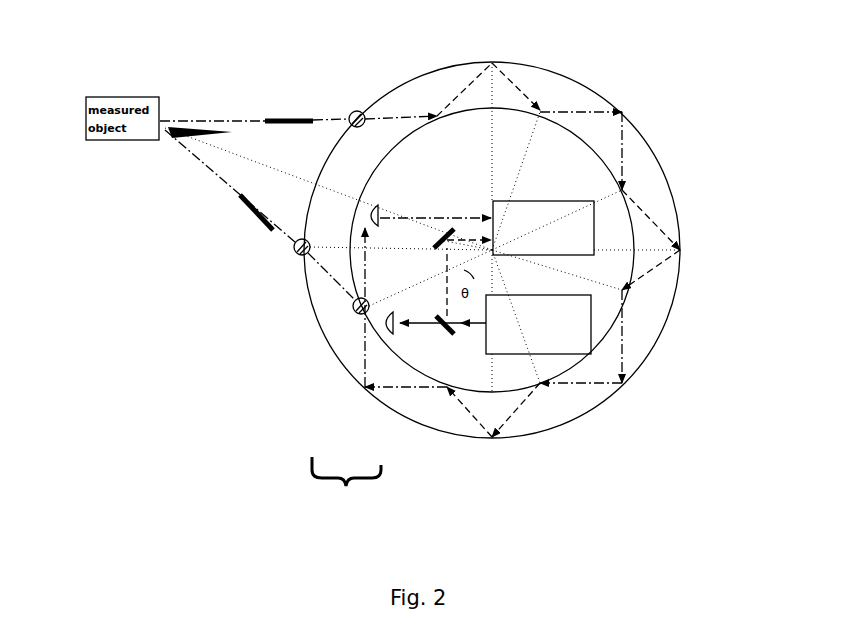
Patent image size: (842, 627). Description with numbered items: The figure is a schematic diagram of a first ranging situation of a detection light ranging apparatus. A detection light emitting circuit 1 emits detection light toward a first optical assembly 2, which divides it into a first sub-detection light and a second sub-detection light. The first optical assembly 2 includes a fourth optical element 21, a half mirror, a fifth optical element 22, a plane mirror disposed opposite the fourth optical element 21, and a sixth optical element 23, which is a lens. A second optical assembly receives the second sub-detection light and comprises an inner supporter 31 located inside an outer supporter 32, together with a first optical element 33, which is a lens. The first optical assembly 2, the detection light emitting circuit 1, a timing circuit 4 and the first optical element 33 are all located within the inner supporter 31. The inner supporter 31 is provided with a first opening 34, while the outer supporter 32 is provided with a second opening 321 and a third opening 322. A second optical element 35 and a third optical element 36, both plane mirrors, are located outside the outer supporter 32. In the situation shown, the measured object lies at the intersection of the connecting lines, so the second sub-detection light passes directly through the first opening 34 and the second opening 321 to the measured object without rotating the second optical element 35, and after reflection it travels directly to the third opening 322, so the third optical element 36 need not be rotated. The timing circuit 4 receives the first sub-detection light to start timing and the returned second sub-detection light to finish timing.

The detection light emitting circuit 1 is at (591, 324).
The first optical assembly 2 is at (346, 485).
The fourth optical element 21 is at (442, 330).
The fifth optical element 22 is at (435, 250).
The sixth optical element 23 is at (386, 332).
The inner supporter 31 is at (580, 362).
The outer supporter 32 is at (560, 425).
The second opening 321 is at (294, 250).
The third opening 322 is at (352, 112).
The first optical element 33 is at (372, 212).
The first opening 34 is at (353, 308).
The second optical element 35 is at (253, 213).
The third optical element 36 is at (283, 118).
The timing circuit 4 is at (594, 233).